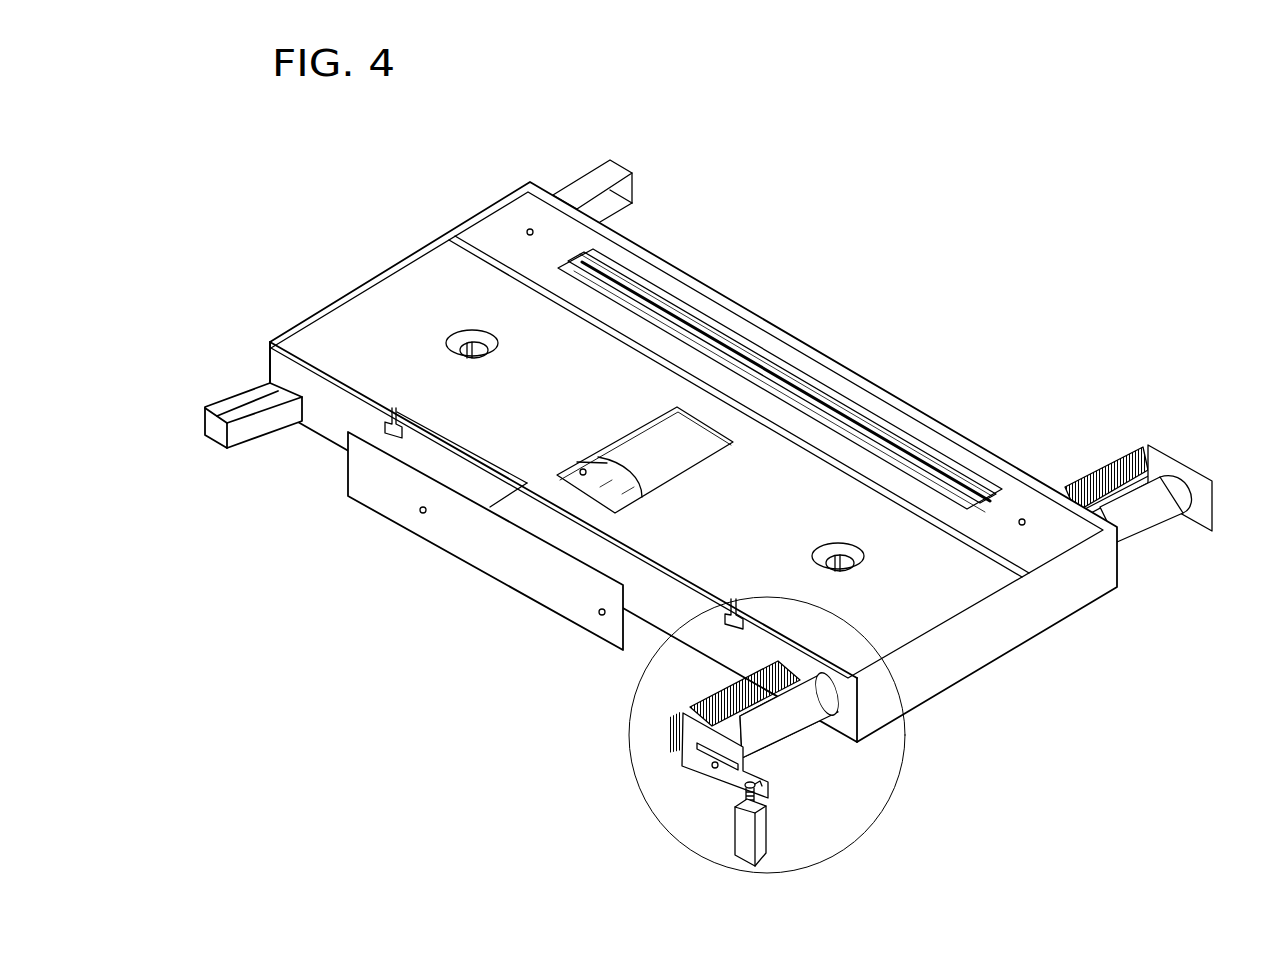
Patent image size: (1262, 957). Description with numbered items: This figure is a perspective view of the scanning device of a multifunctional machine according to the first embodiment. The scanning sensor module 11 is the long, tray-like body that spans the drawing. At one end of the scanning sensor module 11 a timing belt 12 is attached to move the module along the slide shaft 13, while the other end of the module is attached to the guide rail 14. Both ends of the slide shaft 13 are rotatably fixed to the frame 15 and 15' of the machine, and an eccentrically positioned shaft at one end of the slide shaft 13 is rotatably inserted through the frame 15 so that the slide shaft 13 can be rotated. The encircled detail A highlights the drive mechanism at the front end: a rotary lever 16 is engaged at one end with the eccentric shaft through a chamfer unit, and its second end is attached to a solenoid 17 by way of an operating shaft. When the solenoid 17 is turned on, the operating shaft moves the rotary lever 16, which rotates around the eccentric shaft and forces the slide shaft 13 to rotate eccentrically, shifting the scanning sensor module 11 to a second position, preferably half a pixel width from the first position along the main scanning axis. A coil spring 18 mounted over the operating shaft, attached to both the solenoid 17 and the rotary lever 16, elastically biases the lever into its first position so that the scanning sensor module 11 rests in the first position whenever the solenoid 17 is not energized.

The scanning sensor module 11 is at (323, 417).
The timing belt 12 is at (727, 697).
The slide shaft 13 is at (1130, 510).
The guide rail 14 is at (600, 177).
The frame 15 is at (659, 779).
The frame 15' is at (1138, 422).
The rotary lever 16 is at (727, 773).
The solenoid 17 is at (743, 807).
The coil spring 18 is at (760, 840).
The detail region A is at (902, 733).